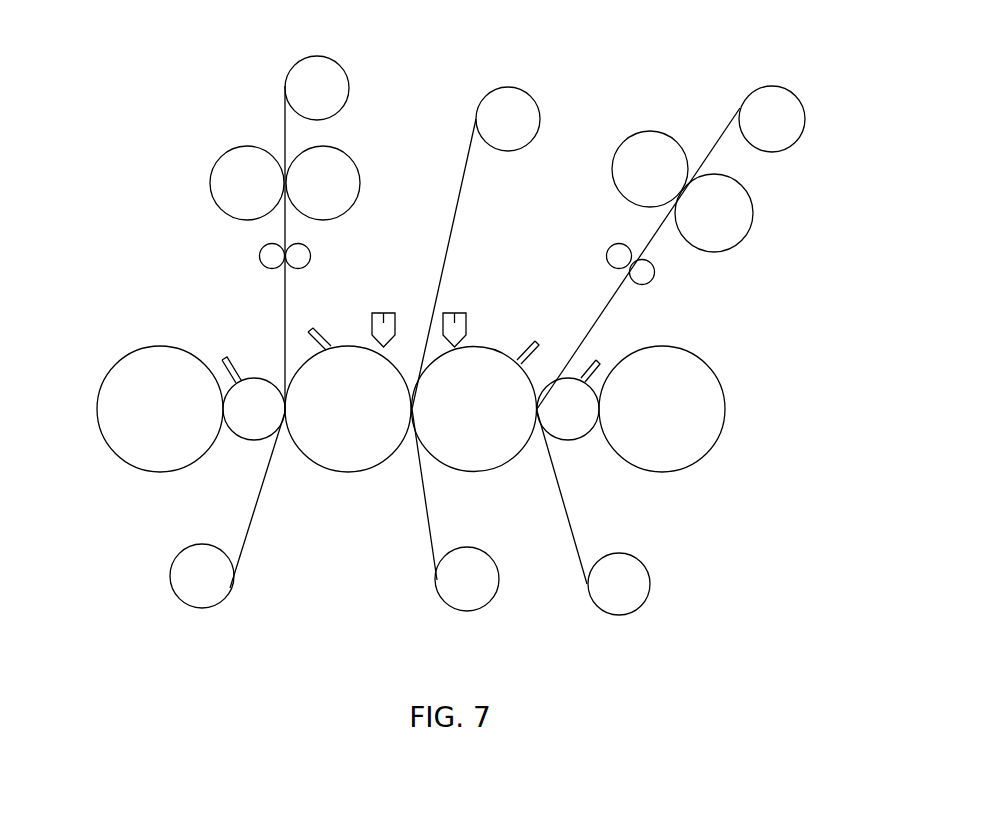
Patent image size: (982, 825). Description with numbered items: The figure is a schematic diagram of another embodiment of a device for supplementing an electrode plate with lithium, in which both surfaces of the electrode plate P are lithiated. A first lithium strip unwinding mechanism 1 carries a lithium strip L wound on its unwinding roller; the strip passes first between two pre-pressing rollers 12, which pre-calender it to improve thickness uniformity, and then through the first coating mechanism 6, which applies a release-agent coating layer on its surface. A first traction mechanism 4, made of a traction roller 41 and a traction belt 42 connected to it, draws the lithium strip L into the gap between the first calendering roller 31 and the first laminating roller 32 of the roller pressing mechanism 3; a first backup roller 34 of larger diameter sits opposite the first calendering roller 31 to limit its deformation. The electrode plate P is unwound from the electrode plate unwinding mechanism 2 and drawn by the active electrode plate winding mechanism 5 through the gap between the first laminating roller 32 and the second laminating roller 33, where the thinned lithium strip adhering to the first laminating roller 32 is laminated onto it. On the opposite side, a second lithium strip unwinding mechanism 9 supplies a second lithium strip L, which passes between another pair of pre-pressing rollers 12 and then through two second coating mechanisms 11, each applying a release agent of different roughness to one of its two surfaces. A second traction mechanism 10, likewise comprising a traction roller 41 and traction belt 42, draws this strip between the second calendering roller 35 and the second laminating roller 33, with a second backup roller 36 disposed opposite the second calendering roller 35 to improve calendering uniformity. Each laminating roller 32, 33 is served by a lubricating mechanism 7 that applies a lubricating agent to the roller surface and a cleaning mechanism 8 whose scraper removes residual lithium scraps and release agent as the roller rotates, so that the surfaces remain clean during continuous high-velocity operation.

The first lithium strip unwinding mechanism 1 is at (337, 82).
The electrode plate unwinding mechanism 2 is at (480, 593).
The roller pressing mechanism 3 is at (780, 392).
The first traction mechanism 4 is at (155, 563).
The electrode plate winding mechanism 5 is at (515, 107).
The first coating mechanism 6 is at (268, 258).
The lubricating mechanism 7 is at (383, 313).
The cleaning mechanism 8 is at (226, 357).
The second lithium strip unwinding mechanism 9 is at (792, 105).
The second traction mechanism 10 is at (653, 540).
The second coating mechanism 11 is at (615, 252).
The pre-pressing rollers 12 is at (222, 182).
The first calendering roller 31 is at (252, 423).
The first laminating roller 32 is at (358, 455).
The second laminating roller 33 is at (468, 450).
The first backup roller 34 is at (118, 393).
The second calendering roller 35 is at (580, 427).
The second backup roller 36 is at (695, 430).
The traction roller 41 is at (213, 587).
The traction belt 42 is at (258, 502).
The lithium strip L is at (285, 108).
The electrode plate P is at (425, 503).